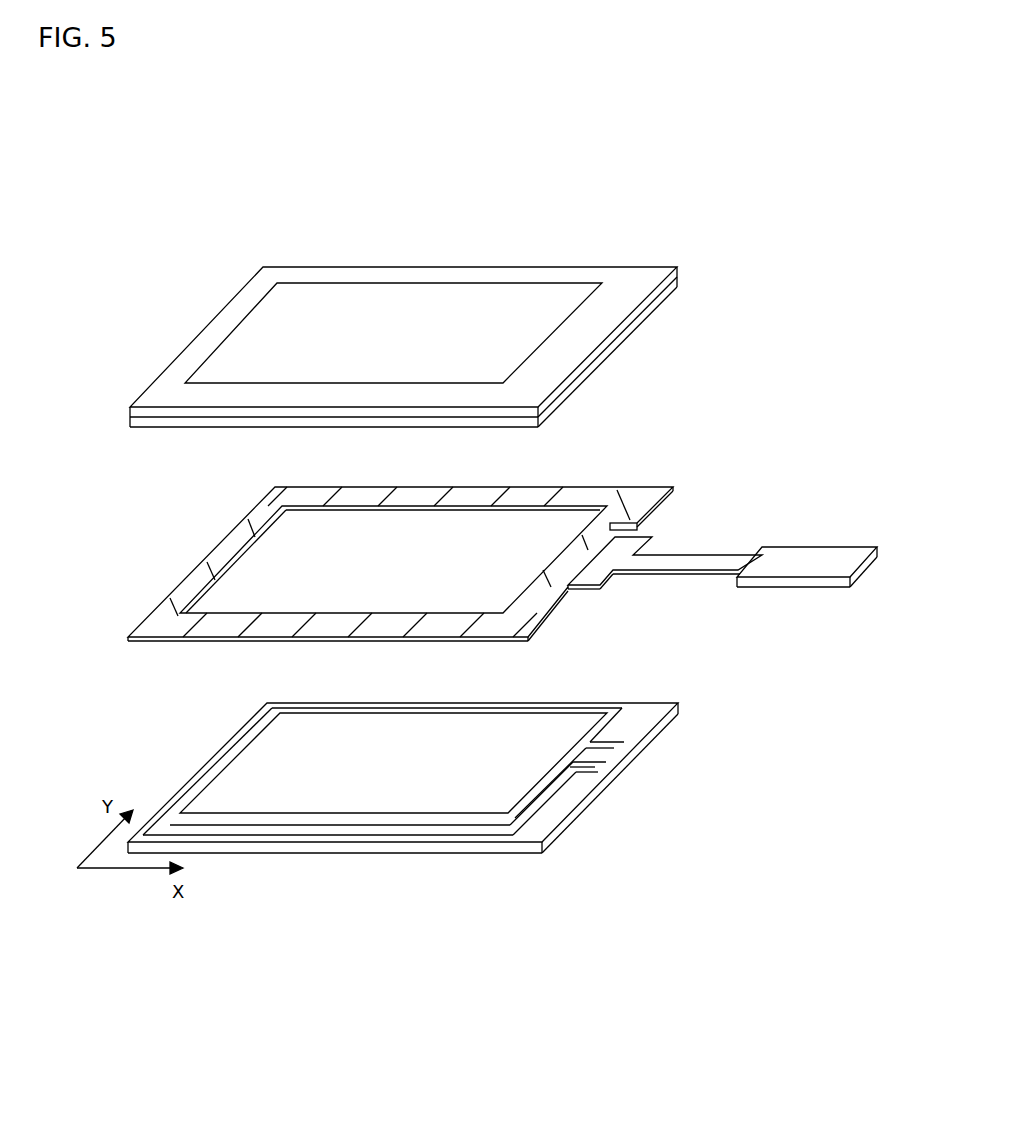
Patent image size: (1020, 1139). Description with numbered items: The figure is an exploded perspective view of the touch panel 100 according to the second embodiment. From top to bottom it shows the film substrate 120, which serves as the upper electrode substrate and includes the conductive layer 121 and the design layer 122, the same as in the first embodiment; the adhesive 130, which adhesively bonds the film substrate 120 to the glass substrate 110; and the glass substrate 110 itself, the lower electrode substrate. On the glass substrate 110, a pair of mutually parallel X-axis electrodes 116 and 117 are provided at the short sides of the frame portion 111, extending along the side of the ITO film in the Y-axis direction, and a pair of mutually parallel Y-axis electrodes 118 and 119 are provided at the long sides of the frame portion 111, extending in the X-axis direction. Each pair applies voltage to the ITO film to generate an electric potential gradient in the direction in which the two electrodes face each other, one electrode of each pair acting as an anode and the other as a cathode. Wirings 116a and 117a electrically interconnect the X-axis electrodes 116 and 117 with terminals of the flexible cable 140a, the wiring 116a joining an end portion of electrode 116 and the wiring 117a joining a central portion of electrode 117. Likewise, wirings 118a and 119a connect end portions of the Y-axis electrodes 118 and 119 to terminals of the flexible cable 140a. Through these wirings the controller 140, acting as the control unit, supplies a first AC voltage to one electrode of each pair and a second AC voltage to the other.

The touch panel 100 is at (127, 141).
The glass substrate 110 is at (348, 884).
The frame portion 111 is at (238, 735).
The X-axis electrode 116 is at (195, 783).
The wiring 116a is at (367, 836).
The X-axis electrode 117 is at (537, 783).
The wiring 117a is at (617, 752).
The Y-axis electrode 118 is at (383, 824).
The wiring 118a is at (603, 762).
The Y-axis electrode 119 is at (418, 706).
The wiring 119a is at (630, 745).
The film substrate 120 is at (430, 316).
The conductive layer 121 is at (147, 430).
The design layer 122 is at (128, 417).
The adhesive 130 is at (574, 458).
The controller 140 is at (801, 590).
The flexible cable 140a is at (680, 553).